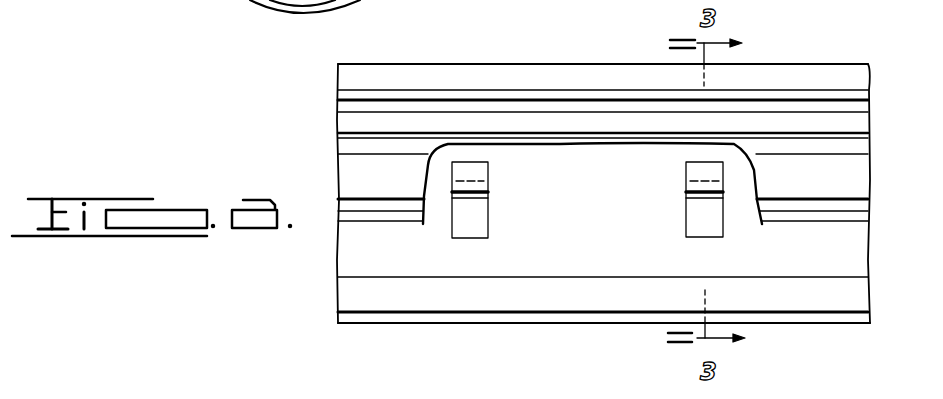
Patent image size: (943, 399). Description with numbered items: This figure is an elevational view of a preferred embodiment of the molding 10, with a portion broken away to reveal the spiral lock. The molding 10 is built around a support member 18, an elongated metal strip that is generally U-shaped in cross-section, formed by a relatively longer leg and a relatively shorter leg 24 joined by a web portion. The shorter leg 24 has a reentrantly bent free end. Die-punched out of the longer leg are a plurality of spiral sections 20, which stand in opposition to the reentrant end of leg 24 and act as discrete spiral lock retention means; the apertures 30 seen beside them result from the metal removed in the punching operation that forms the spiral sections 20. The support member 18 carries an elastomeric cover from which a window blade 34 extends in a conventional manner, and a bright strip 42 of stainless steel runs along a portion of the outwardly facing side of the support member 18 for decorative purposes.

The molding 10 is at (494, 60).
The support member 18 is at (600, 254).
The spiral sections 20 is at (494, 180).
The shorter leg 24 is at (797, 206).
The apertures 30 is at (490, 220).
The window blade 34 is at (345, 80).
The bright strip 42 is at (363, 170).